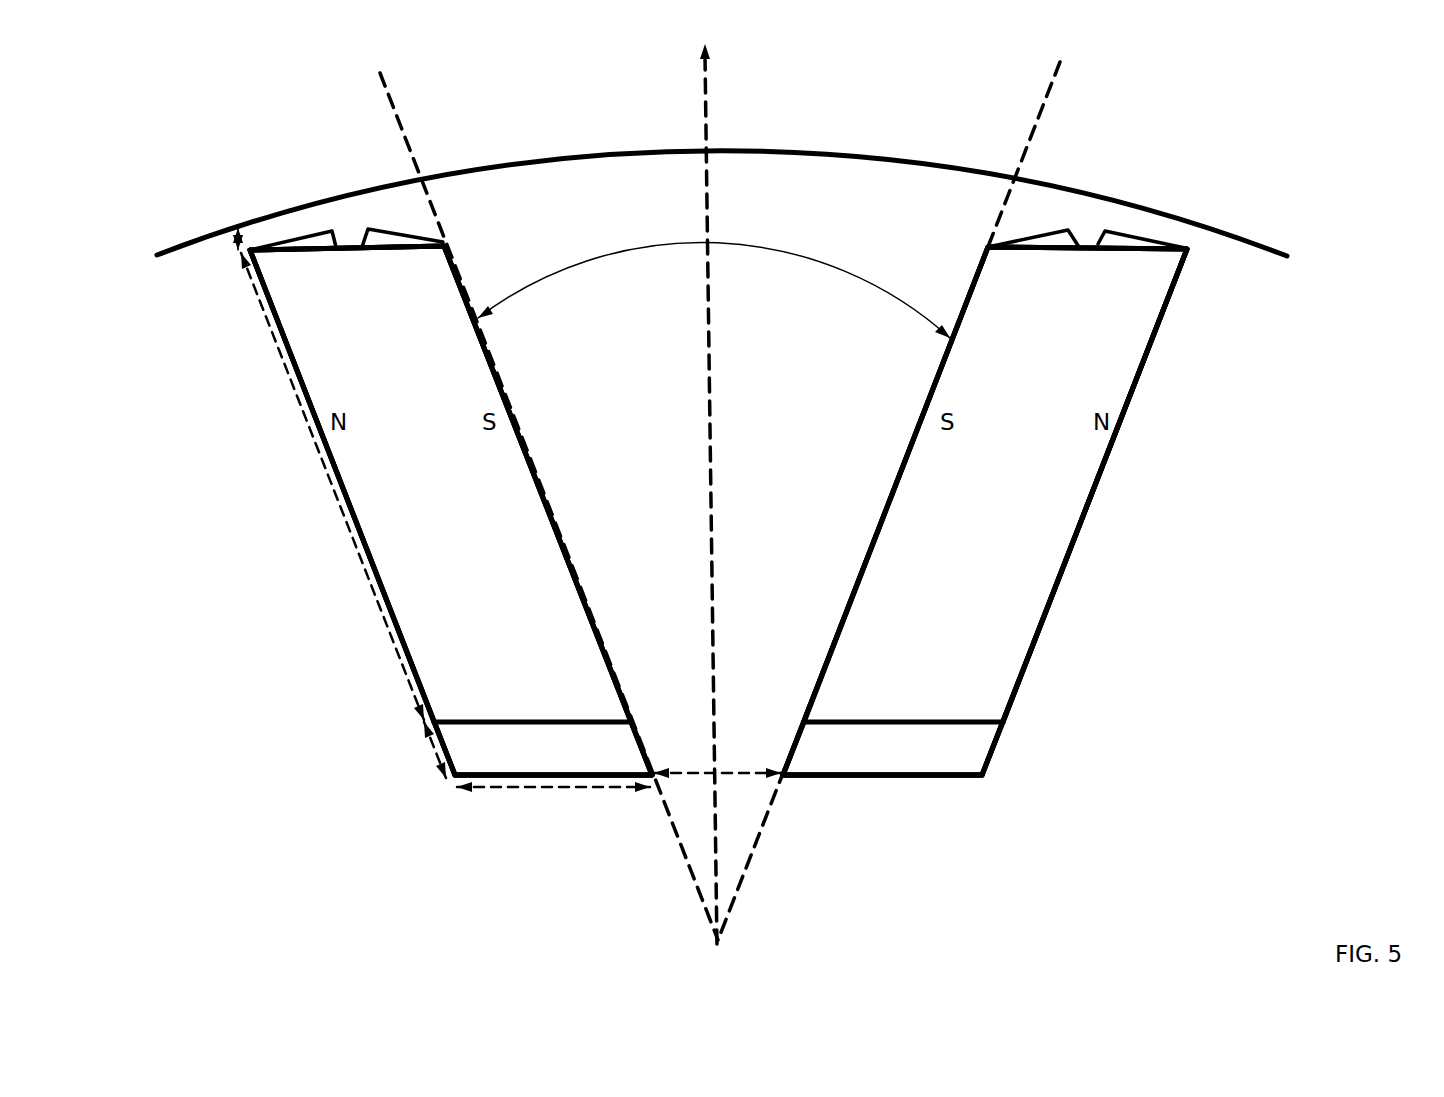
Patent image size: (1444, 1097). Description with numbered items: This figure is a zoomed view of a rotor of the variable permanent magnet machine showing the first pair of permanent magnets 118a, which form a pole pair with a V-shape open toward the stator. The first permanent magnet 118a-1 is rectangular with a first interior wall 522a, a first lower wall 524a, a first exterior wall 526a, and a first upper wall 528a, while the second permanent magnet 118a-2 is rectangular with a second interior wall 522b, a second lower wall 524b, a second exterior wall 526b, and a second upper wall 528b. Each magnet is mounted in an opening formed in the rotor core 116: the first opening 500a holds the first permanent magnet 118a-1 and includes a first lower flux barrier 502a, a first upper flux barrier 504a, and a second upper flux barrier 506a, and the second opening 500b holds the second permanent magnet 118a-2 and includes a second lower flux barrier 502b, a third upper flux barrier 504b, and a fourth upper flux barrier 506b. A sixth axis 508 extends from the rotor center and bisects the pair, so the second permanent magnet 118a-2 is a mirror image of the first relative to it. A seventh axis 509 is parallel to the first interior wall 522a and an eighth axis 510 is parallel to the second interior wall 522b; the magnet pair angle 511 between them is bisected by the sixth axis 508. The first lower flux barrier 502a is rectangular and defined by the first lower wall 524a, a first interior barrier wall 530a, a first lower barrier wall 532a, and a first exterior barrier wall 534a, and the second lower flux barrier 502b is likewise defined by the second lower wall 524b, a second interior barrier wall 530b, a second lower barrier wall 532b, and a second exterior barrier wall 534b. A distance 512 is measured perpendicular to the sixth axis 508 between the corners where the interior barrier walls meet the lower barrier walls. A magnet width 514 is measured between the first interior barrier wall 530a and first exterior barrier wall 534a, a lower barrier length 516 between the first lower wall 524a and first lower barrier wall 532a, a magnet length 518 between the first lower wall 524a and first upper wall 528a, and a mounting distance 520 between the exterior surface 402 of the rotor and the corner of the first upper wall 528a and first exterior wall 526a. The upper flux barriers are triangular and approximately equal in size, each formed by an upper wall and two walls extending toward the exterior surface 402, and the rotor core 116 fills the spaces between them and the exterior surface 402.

The exterior surface 402 is at (516, 152).
The sixth axis 508 is at (708, 110).
The seventh axis 509 is at (383, 73).
The eighth axis 510 is at (1062, 68).
The magnet pair angle 511 is at (830, 250).
The distance 512 is at (738, 768).
The magnet width 514 is at (552, 790).
The lower barrier length 516 is at (432, 743).
The magnet length 518 is at (350, 535).
The mounting distance 520 is at (230, 242).
The first opening 500a is at (285, 235).
The second opening 500b is at (1150, 228).
The first lower flux barrier 502a is at (443, 786).
The second lower flux barrier 502b is at (993, 780).
The first upper flux barrier 504a is at (317, 242).
The third upper flux barrier 504b is at (1063, 237).
The second upper flux barrier 506a is at (370, 235).
The fourth upper flux barrier 506b is at (1112, 237).
The first interior wall 522a is at (472, 325).
The second interior wall 522b is at (903, 478).
The first lower wall 524a is at (520, 720).
The second lower wall 524b is at (935, 720).
The first exterior wall 526a is at (355, 520).
The second exterior wall 526b is at (1100, 466).
The first upper wall 528a is at (350, 251).
The second upper wall 528b is at (1065, 251).
The first interior barrier wall 530a is at (638, 730).
The second interior barrier wall 530b is at (795, 738).
The first lower barrier wall 532a is at (572, 757).
The second lower barrier wall 532b is at (820, 773).
The first exterior barrier wall 534a is at (443, 745).
The second exterior barrier wall 534b is at (997, 751).
The rotor core 116 is at (272, 480).
The first pair of permanent magnets 118a is at (1170, 375).
The first permanent magnet 118a-1 is at (518, 600).
The second permanent magnet 118a-2 is at (1012, 600).